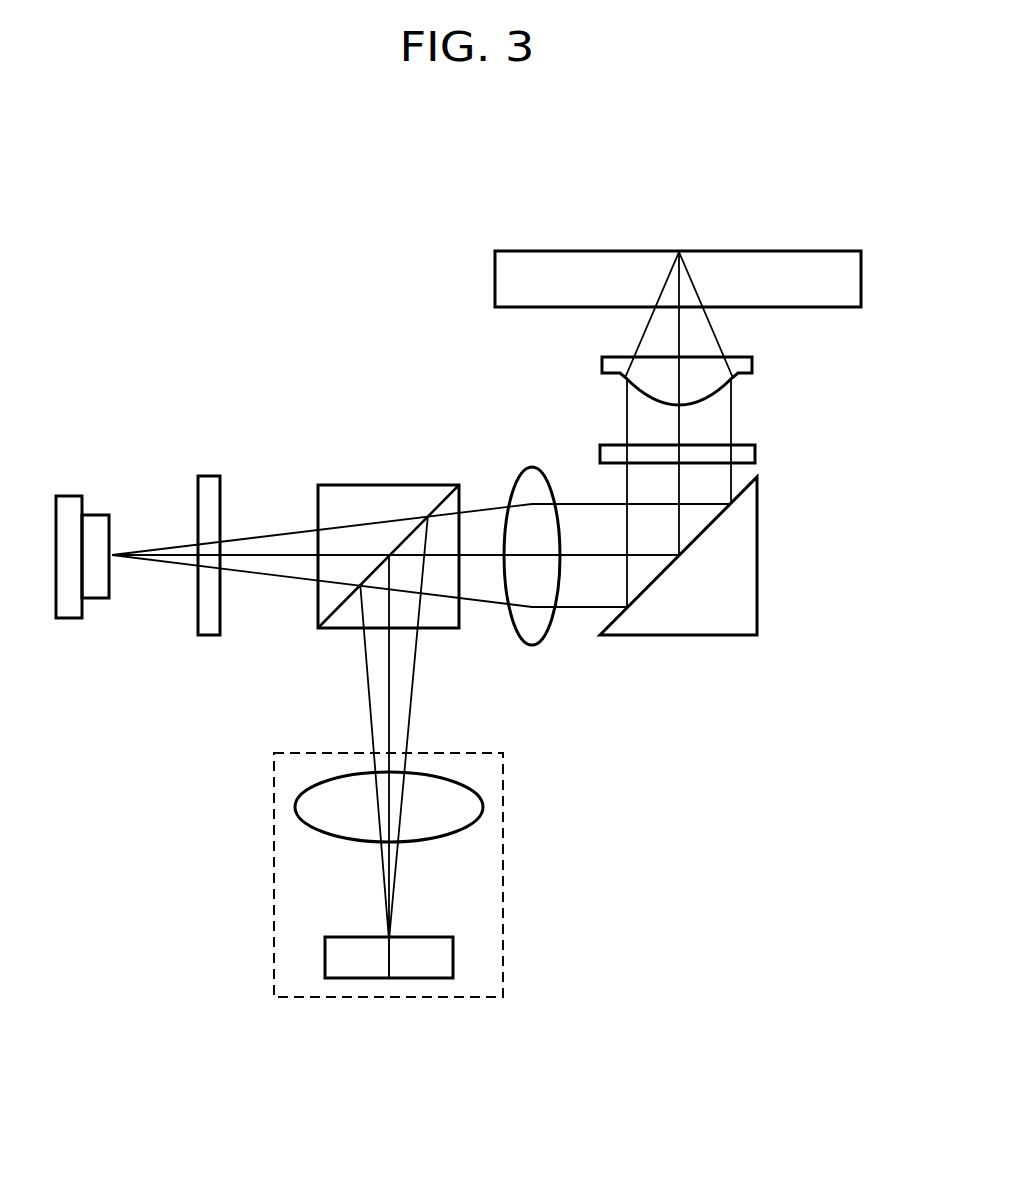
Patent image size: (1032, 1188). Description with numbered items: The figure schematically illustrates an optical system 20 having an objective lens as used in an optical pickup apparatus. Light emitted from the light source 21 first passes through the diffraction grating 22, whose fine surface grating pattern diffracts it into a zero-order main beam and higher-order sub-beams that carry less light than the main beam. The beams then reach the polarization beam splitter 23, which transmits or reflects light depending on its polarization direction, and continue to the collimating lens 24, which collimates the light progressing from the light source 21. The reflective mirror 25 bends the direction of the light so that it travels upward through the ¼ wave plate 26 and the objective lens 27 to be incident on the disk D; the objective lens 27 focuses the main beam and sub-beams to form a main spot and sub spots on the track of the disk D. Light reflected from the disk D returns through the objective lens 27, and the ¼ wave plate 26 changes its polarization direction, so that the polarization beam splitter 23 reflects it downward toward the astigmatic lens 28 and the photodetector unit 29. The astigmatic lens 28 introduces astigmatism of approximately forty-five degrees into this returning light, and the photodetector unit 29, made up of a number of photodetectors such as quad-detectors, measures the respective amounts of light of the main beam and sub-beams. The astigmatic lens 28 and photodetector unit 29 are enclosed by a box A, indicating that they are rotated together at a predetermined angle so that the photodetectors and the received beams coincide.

The optical system 20 is at (157, 916).
The light source 21 is at (71, 496).
The diffraction grating 22 is at (211, 476).
The polarization beam splitter 23 is at (390, 485).
The collimating lens 24 is at (531, 467).
The reflective mirror 25 is at (758, 557).
The ¼ wave plate 26 is at (757, 455).
The objective lens 27 is at (754, 366).
The astigmatic lens 28 is at (477, 821).
The photodetector unit 29 is at (453, 960).
The box A is at (503, 902).
The disk D is at (861, 279).